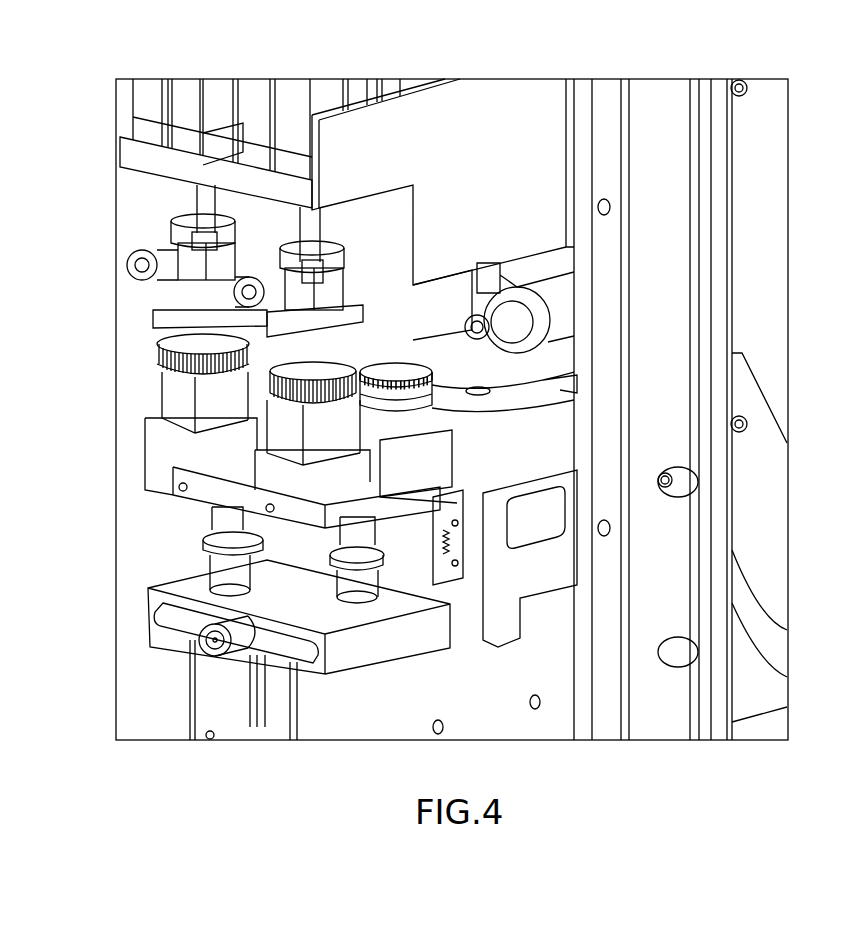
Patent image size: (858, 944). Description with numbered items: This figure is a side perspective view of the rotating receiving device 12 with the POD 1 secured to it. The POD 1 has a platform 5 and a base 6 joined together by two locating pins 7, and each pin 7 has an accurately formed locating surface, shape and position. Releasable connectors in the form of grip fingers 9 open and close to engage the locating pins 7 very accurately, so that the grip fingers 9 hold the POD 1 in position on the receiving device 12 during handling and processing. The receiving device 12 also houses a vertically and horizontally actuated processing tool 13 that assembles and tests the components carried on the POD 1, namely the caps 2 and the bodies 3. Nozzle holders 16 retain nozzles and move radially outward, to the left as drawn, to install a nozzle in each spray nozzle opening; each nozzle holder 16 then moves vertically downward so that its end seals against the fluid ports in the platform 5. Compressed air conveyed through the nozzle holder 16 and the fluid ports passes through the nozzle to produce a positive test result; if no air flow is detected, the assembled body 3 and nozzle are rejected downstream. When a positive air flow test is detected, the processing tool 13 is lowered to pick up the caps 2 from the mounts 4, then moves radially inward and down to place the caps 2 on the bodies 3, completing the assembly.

The POD 1 is at (399, 667).
The caps 2 is at (163, 357).
The bodies 3 is at (432, 393).
The mounts 4 is at (167, 405).
The platform 5 is at (150, 475).
The base 6 is at (167, 634).
The locating pins 7 is at (205, 562).
The grip fingers 9 is at (457, 547).
The rotating receiving device 12 is at (670, 188).
The processing tool 13 is at (177, 296).
The nozzle holders 16 is at (505, 335).